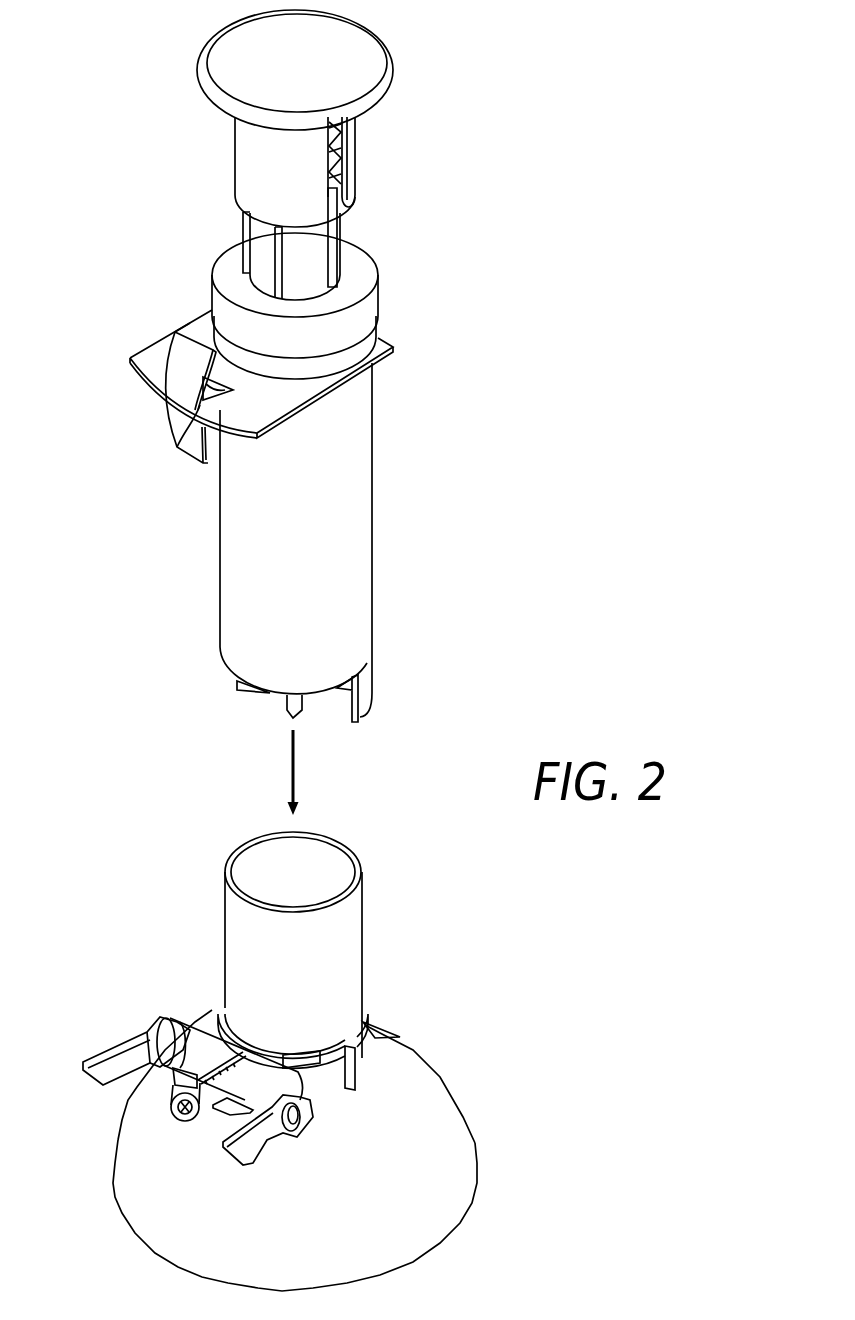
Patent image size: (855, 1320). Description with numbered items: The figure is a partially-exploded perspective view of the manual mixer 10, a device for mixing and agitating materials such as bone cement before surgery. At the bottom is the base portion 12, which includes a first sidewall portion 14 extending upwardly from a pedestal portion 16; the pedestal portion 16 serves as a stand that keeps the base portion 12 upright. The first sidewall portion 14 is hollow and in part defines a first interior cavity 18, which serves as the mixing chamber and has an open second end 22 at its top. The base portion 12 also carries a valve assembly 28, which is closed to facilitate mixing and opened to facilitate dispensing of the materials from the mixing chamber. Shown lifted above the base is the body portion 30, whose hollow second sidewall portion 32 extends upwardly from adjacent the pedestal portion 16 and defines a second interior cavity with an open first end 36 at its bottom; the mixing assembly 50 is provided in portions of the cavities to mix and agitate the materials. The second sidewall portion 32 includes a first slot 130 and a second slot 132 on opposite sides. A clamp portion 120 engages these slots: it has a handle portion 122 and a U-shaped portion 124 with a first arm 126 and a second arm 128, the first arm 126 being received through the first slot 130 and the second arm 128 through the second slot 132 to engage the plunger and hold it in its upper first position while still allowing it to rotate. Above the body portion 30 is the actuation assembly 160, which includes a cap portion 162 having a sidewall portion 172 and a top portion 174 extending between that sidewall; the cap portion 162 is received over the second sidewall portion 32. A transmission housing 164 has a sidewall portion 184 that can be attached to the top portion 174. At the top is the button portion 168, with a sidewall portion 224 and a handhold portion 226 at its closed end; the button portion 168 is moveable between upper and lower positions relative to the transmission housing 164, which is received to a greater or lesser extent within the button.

The manual mixer 10 is at (333, 1042).
The base portion 12 is at (484, 1136).
The first sidewall portion 14 is at (330, 948).
The pedestal portion 16 is at (476, 1190).
The first interior cavity 18 is at (323, 865).
The open second end 22 is at (362, 876).
The valve assembly 28 is at (280, 1163).
The body portion 30 is at (316, 566).
The second sidewall portion 32 is at (368, 656).
The open first end 36 is at (228, 667).
The mixing assembly 50 is at (276, 717).
The clamp portion 120 is at (264, 382).
The handle portion 122 is at (175, 355).
The U-shaped portion 124 is at (343, 367).
The first arm 126 is at (375, 346).
The second arm 128 is at (204, 318).
The first slot 130 is at (283, 394).
The second slot 132 is at (213, 350).
The actuation assembly 160 is at (367, 173).
The cap portion 162 is at (356, 305).
The transmission housing 164 is at (351, 237).
The button portion 168 is at (348, 70).
The sidewall portion 172 is at (363, 321).
The top portion 174 is at (367, 266).
The sidewall portion 184 is at (258, 236).
The sidewall portion 224 is at (250, 144).
The handhold portion 226 is at (325, 38).